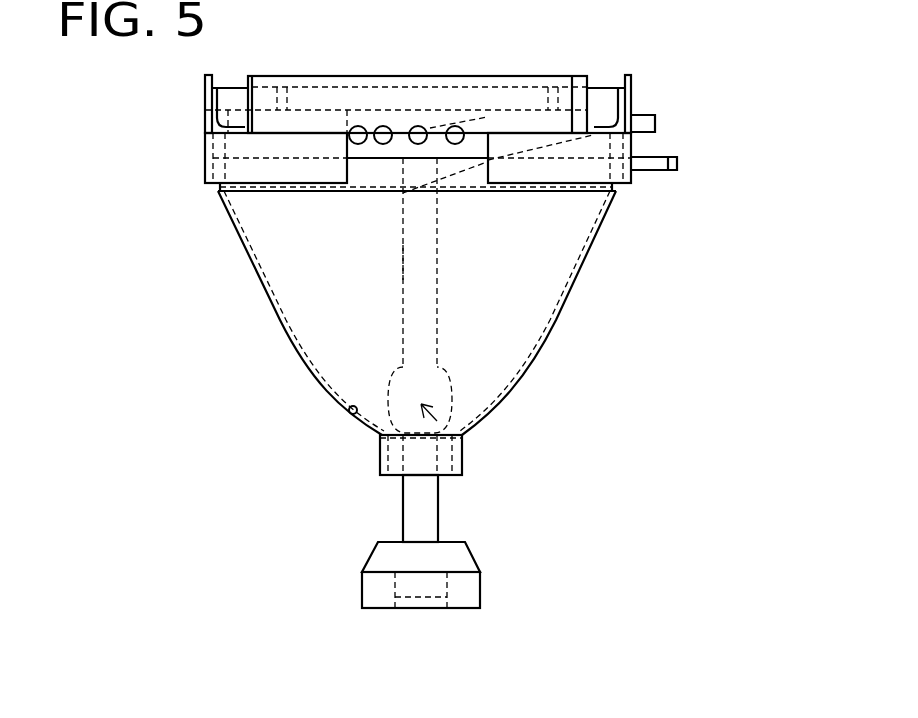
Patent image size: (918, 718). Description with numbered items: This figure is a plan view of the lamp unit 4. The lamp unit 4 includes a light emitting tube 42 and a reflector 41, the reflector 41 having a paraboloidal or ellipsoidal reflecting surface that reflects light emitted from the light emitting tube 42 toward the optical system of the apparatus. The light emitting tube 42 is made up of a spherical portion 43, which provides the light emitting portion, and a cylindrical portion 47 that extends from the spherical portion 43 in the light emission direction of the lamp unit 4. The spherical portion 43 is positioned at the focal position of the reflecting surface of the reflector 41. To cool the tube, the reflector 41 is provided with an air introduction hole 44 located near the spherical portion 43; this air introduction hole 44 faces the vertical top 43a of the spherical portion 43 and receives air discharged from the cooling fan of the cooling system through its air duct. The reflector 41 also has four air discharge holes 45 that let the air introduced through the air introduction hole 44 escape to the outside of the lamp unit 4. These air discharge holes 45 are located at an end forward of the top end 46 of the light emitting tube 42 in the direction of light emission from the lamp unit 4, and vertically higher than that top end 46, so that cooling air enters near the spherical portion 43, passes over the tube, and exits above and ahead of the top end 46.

The lamp unit 4 is at (713, 246).
The reflector 41 is at (577, 287).
The light emitting tube 42 is at (437, 277).
The spherical portion 43 is at (447, 372).
The vertical top 43a is at (463, 438).
The air introduction hole 44 is at (353, 414).
The air discharge holes 45 is at (362, 128).
The top end 46 is at (450, 186).
The cylindrical portion 47 is at (403, 262).